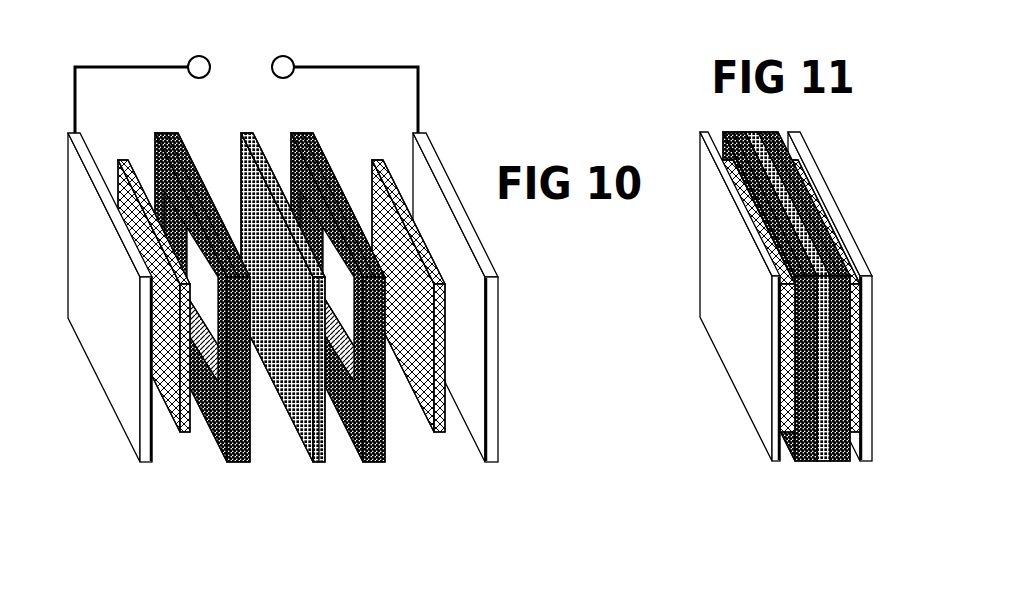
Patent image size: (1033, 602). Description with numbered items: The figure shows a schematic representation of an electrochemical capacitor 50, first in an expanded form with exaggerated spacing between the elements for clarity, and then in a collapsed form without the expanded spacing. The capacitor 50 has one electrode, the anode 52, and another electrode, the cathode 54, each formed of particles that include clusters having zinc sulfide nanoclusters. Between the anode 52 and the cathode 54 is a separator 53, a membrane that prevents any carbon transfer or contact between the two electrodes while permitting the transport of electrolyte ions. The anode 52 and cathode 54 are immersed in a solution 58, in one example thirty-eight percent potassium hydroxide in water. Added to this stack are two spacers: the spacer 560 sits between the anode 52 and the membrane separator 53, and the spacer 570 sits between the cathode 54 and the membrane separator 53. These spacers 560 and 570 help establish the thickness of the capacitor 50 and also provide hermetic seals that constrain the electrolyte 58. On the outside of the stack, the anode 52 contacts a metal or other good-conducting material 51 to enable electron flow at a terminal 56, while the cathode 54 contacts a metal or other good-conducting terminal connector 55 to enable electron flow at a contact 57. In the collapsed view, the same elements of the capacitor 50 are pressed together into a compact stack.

In FIG. 10, the electrochemical capacitor 50 is at (96, 425).
In FIG. 11, the electrochemical capacitor 50 is at (884, 243).
In FIG. 10, the good-conducting material 51 is at (147, 463).
In FIG. 10, the anode 52 is at (184, 434).
In FIG. 10, the separator 53 is at (316, 462).
In FIG. 10, the cathode 54 is at (438, 433).
In FIG. 10, the terminal connector 55 is at (494, 463).
In FIG. 10, the terminal 56 is at (190, 56).
In FIG. 10, the contact 57 is at (286, 60).
In FIG. 10, the solution 58 is at (141, 163).
In FIG. 10, the spacer 560 is at (240, 462).
In FIG. 10, the spacer 570 is at (374, 462).